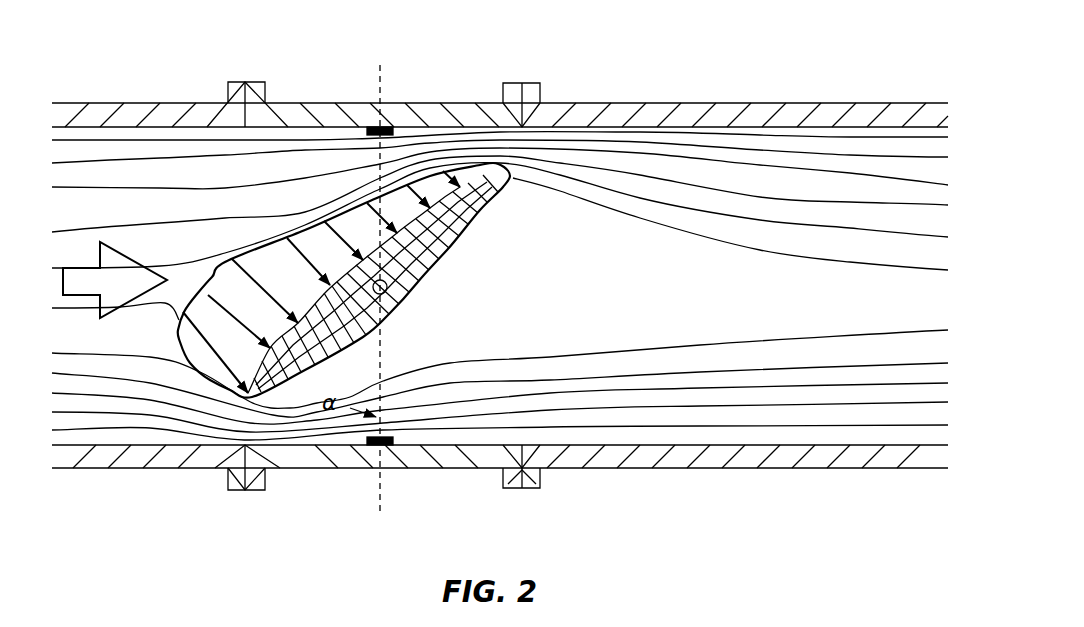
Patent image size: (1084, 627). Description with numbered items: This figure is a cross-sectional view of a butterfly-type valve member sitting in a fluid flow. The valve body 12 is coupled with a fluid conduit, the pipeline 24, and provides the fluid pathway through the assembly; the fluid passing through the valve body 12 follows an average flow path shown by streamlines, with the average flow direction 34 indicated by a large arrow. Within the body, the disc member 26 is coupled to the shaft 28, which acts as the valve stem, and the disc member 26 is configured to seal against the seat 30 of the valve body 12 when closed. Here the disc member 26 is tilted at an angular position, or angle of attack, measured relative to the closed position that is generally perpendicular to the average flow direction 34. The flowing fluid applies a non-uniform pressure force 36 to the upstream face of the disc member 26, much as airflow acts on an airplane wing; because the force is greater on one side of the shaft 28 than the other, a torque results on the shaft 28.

The valve body 12 is at (455, 102).
The pipeline 24 is at (208, 102).
The disc member 26 is at (470, 222).
The shaft 28 is at (389, 288).
The seat 30 is at (376, 125).
The average flow direction 34 is at (115, 280).
The pressure force 36 is at (232, 259).